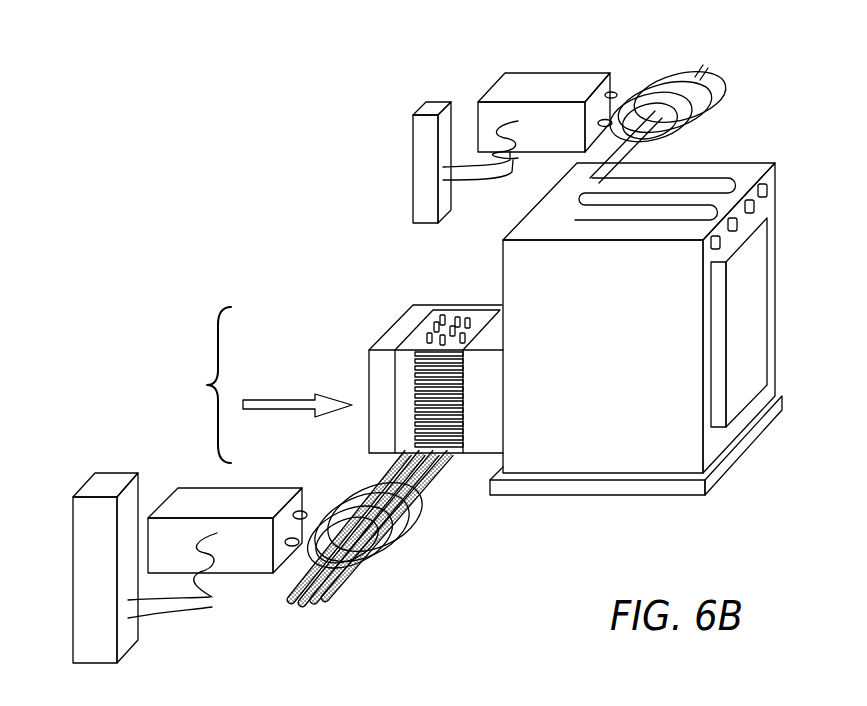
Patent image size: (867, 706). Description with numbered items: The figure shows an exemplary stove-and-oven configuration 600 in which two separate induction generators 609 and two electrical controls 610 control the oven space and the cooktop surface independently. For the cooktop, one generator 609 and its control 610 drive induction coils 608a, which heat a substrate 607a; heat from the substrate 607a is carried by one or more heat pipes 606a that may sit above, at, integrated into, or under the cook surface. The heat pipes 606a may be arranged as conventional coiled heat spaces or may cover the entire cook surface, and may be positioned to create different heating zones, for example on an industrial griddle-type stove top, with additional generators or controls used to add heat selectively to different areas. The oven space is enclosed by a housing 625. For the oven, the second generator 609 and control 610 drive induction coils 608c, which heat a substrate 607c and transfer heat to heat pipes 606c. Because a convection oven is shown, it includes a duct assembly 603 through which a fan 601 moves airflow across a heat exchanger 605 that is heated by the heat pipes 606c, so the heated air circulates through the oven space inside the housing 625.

The optical system 600 is at (208, 201).
The fan 601 is at (370, 390).
The duct assembly 603 is at (258, 385).
The heat exchanger 605 is at (418, 387).
The heat pipes 606a is at (758, 168).
The heat pipes 606c is at (455, 302).
The substrate 607a is at (658, 120).
The substrate 607c is at (365, 552).
The induction coils 608a is at (662, 78).
The induction coils 608c is at (423, 515).
The induction generators 609 is at (520, 88).
The electrical controls 610 is at (415, 175).
The housing 625 is at (673, 285).